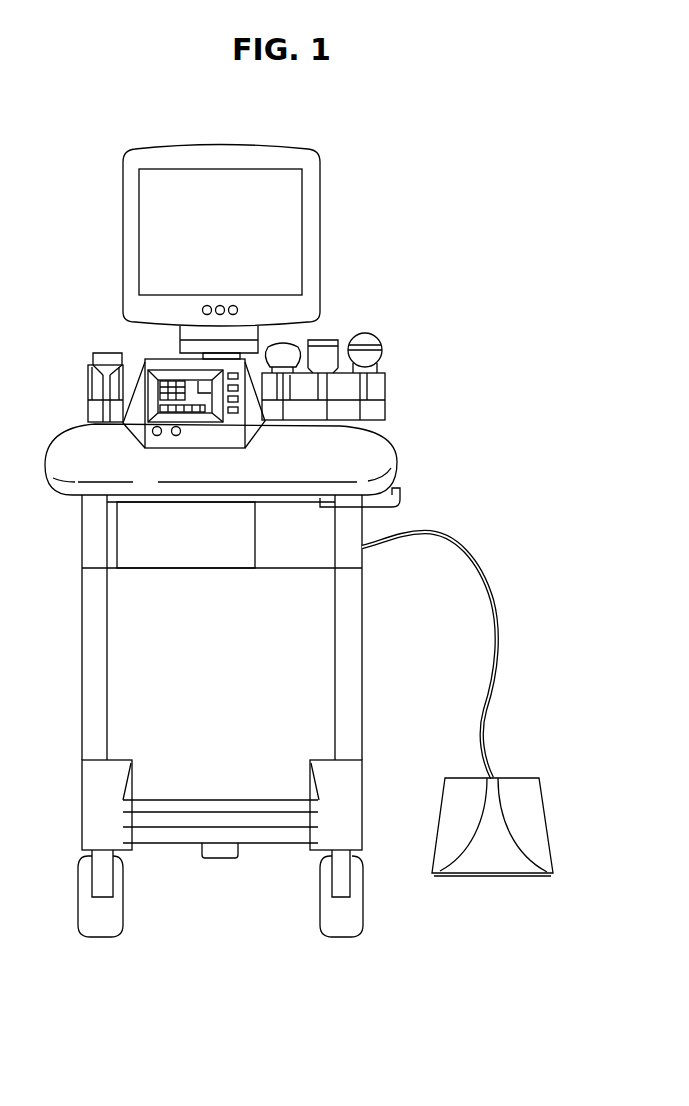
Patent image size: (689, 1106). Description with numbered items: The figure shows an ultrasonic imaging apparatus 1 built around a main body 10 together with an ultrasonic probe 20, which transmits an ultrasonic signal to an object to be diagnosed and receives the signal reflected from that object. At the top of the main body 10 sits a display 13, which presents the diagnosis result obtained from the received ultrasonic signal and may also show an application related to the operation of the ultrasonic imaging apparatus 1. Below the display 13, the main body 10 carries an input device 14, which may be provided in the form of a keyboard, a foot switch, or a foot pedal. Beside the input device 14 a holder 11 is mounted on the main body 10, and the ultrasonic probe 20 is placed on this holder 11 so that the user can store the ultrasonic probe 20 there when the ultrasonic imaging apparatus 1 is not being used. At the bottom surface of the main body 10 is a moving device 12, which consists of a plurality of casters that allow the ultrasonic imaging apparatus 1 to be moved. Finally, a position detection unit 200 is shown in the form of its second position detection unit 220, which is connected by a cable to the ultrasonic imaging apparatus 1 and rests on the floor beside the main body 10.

The ultrasonic imaging apparatus 1 is at (392, 147).
The main body 10 is at (381, 650).
The holder 11 is at (350, 387).
The moving device 12 is at (355, 902).
The display 13 is at (113, 205).
The input device 14 is at (122, 385).
The ultrasonic probe 20 is at (388, 323).
The second position detection unit 220 is at (467, 704).
The position detection unit 200 is at (516, 766).